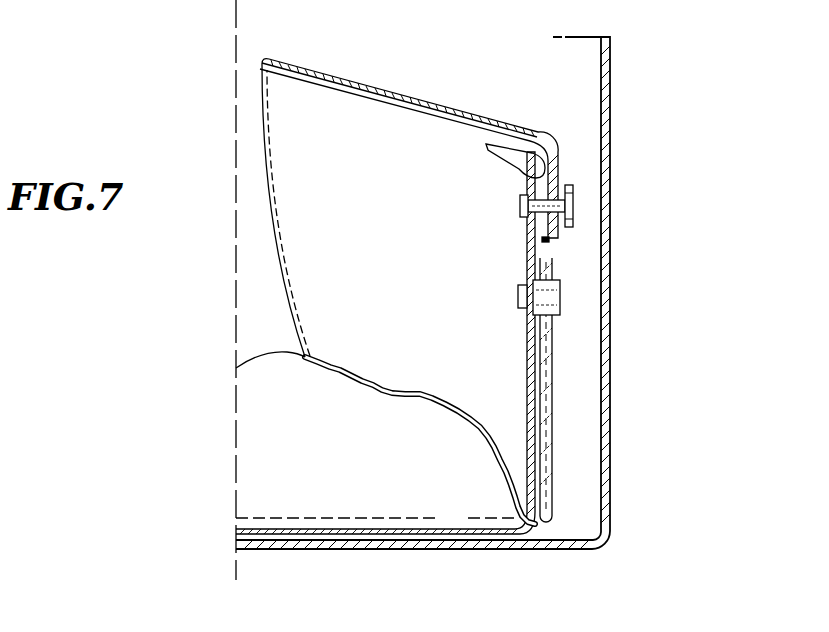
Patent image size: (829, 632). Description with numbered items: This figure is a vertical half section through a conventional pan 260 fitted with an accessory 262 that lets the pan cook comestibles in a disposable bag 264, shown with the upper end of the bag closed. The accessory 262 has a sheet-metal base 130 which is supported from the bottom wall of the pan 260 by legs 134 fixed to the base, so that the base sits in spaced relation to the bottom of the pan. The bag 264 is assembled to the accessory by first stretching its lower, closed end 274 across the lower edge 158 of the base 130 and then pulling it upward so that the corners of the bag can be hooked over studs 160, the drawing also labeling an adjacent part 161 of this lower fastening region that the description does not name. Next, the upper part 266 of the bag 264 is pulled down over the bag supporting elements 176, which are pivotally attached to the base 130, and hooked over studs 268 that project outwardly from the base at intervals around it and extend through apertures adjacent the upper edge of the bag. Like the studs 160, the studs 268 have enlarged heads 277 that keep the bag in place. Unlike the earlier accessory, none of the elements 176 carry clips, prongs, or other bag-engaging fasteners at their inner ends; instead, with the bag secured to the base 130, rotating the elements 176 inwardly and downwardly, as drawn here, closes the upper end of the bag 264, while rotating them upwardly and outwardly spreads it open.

The bag supporting elements 176 is at (353, 77).
The upper part of bag 266 is at (412, 100).
The enlarged heads 277 is at (570, 184).
The studs 268 is at (588, 203).
The pan 260 is at (654, 231).
The base 130 is at (552, 243).
The bolt 161 is at (560, 284).
The studs 160 is at (613, 306).
The accessory 262 is at (579, 315).
The disposable bag 264 is at (565, 439).
The lower edge of base 158 is at (295, 520).
The lower closed end of bag 274 is at (379, 531).
The legs 134 is at (460, 549).